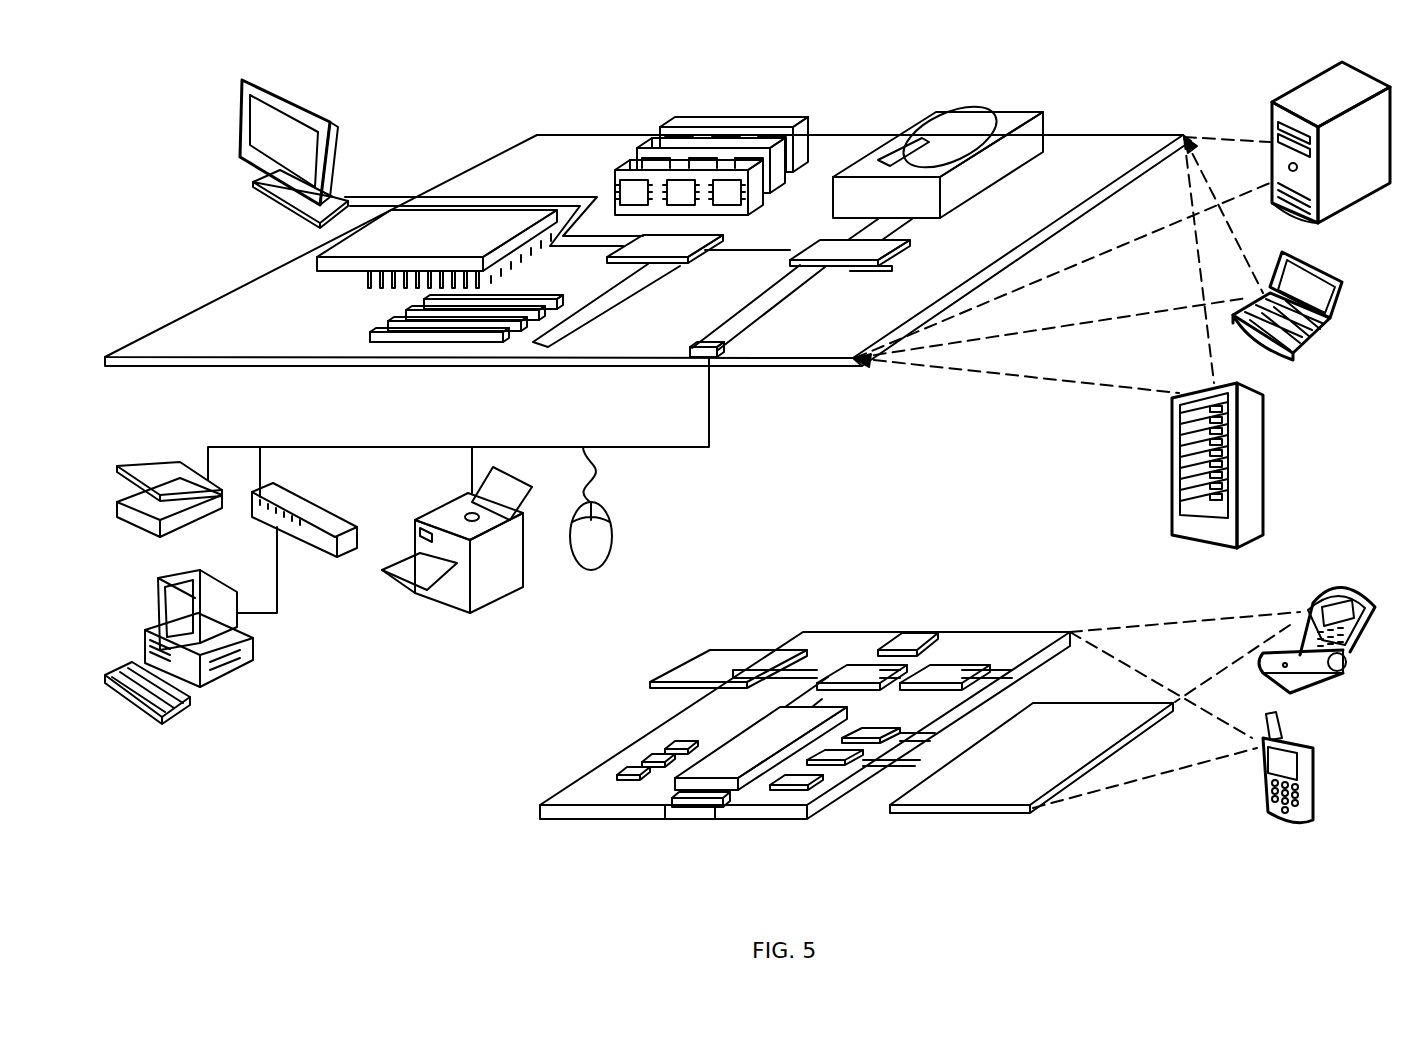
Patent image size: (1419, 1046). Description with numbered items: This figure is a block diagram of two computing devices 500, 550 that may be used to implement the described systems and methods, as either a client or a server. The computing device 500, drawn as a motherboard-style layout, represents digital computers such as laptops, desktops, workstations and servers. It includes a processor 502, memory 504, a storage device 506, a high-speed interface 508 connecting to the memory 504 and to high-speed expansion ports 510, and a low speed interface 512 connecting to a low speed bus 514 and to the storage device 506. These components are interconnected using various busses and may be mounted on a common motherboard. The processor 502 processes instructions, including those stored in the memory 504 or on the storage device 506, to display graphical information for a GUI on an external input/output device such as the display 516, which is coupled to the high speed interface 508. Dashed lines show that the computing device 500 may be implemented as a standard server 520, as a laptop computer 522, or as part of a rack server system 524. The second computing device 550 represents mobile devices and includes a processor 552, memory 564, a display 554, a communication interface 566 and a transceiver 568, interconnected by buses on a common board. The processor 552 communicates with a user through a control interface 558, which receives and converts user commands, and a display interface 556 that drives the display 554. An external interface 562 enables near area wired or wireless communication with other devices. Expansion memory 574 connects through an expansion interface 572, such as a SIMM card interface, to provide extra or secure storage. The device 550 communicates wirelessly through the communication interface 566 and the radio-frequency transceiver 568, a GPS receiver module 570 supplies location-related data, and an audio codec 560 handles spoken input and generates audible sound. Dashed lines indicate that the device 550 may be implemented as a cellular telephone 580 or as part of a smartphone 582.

The computing device 500 is at (451, 98).
The processor 502 is at (317, 263).
The memory 504 is at (688, 125).
The storage device 506 is at (937, 112).
The high-speed interface 508 is at (643, 245).
The high-speed expansion ports 510 is at (393, 325).
The low speed interface 512 is at (830, 250).
The low speed bus 514 is at (713, 352).
The display 516 is at (243, 80).
The standard server 520 is at (1270, 112).
The laptop computer 522 is at (1340, 281).
The rack server system 524 is at (1170, 493).
The computing device 550 is at (513, 824).
The processor 552 is at (732, 770).
The display 554 is at (987, 790).
The display interface 556 is at (807, 778).
The control interface 558 is at (837, 753).
The audio codec 560 is at (870, 732).
The external interface 562 is at (694, 810).
The memory 564 is at (637, 762).
The communication interface 566 is at (863, 673).
The transceiver 568 is at (947, 673).
The GPS receiver module 570 is at (917, 632).
The expansion interface 572 is at (783, 648).
The expansion memory 574 is at (700, 650).
The cellular telephone 580 is at (1323, 556).
The smartphone 582 is at (1261, 773).